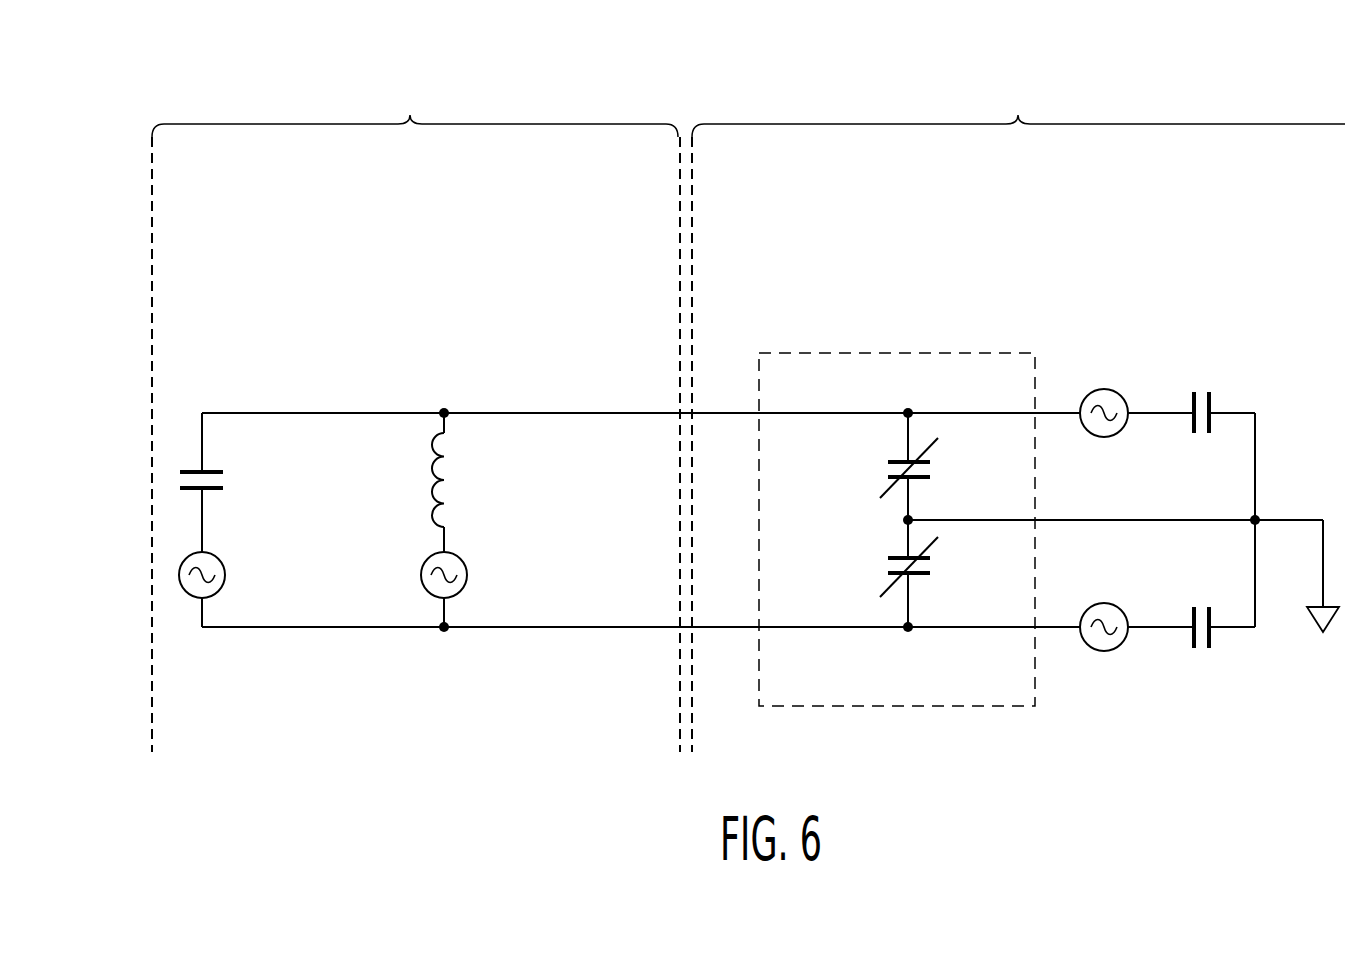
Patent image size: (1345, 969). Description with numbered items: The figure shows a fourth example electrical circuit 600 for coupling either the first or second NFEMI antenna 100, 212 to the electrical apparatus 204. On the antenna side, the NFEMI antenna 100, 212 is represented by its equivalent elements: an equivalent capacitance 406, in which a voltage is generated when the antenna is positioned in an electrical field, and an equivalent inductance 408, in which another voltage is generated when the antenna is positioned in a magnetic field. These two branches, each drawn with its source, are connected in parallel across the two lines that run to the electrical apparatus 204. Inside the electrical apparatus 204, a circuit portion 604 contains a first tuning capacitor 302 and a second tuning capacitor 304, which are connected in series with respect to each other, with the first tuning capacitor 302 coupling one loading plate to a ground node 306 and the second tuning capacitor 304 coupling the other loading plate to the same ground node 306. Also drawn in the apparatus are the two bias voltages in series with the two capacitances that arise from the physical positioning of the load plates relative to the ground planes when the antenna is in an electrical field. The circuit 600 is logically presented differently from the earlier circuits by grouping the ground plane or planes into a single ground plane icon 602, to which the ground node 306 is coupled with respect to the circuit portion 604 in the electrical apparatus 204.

The fourth example electrical circuit 600 is at (116, 114).
The NFEMI antenna 100 is at (530, 399).
The NFEMI antenna 212 is at (513, 92).
The electrical apparatus 204 is at (1157, 93).
The equivalent capacitance 406 is at (268, 487).
The equivalent inductance 408 is at (488, 486).
The circuit portion 604 is at (827, 353).
The first tuning capacitor 302 is at (887, 462).
The second tuning capacitor 304 is at (888, 573).
The ground node 306 is at (912, 516).
The ground plane icon 602 is at (1320, 636).